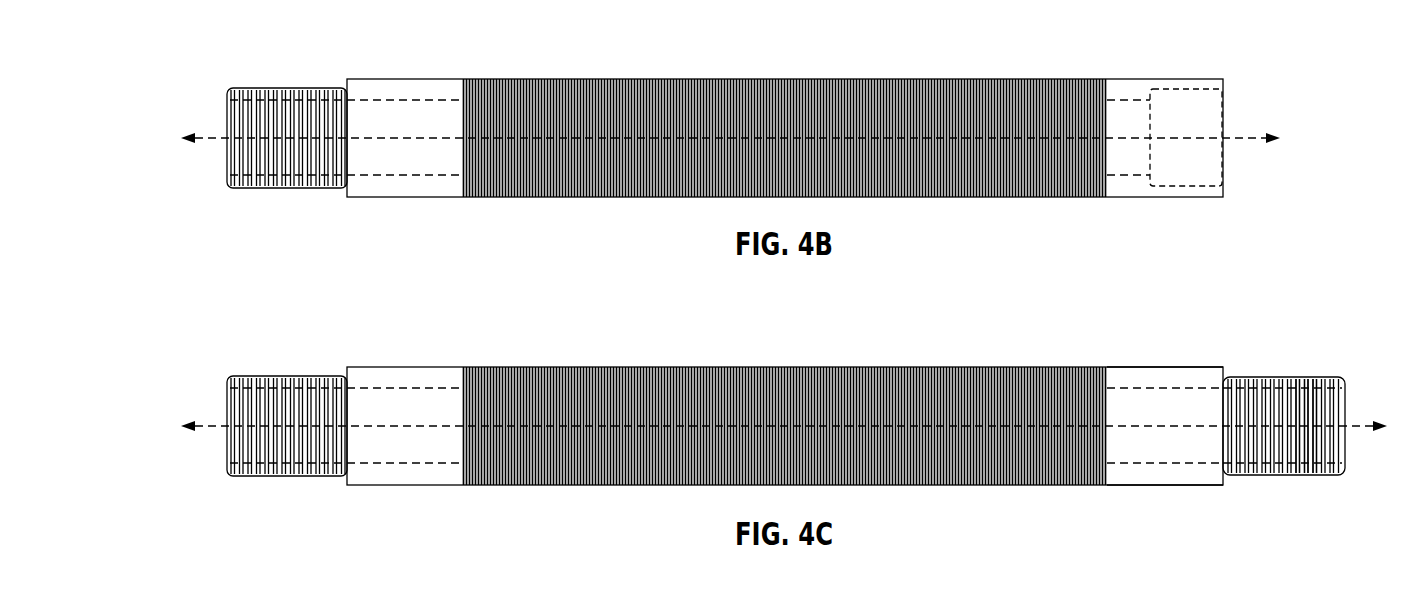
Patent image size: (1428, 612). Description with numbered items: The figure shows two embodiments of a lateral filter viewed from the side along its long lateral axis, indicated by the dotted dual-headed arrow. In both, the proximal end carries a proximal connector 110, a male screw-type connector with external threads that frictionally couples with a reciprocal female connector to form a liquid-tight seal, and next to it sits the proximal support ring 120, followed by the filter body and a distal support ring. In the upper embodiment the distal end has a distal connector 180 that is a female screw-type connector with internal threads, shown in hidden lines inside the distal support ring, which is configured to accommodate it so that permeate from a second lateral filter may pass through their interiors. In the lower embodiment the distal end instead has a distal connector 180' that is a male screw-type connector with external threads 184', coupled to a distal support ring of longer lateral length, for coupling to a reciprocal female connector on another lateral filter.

In FIG. 4B, the proximal connector 110 is at (305, 110).
In FIG. 4C, the proximal connector 110 is at (305, 397).
In FIG. 4B, the proximal support ring 120 is at (407, 90).
In FIG. 4C, the proximal support ring 120 is at (407, 377).
In FIG. 4B, the distal connector 180 is at (1223, 132).
In FIG. 4C, the distal connector 180' is at (1284, 389).
In FIG. 4C, the external threads 184' is at (1326, 393).